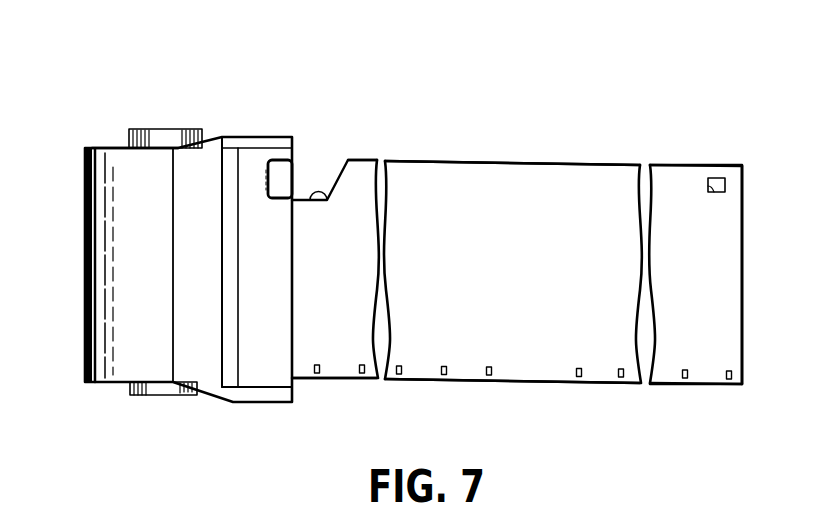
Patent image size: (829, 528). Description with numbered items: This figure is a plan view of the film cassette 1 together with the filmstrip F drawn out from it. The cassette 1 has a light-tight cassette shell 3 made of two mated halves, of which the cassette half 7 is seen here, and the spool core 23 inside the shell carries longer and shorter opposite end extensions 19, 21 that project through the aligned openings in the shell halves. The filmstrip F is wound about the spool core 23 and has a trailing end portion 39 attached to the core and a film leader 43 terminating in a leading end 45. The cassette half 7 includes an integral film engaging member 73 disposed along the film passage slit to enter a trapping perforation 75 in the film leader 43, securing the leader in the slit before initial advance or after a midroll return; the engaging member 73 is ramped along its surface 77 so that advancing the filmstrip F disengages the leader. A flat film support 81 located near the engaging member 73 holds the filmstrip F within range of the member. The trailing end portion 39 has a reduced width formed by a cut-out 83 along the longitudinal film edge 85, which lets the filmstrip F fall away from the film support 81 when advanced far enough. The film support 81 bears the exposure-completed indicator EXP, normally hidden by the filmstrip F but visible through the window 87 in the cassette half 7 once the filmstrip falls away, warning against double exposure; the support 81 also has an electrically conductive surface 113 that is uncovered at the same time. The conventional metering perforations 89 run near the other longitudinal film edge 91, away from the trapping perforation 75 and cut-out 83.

The film cassette 1 is at (215, 123).
The cassette shell 3 is at (82, 191).
The cassette half 7 is at (86, 243).
The longer end extension 19 is at (162, 128).
The shorter end extension 21 is at (142, 396).
The spool core 23 is at (130, 146).
The trailing end portion 39 is at (343, 317).
The film leader 43 is at (700, 293).
The leading end 45 is at (742, 327).
The film engaging member 73 is at (265, 166).
The trapping perforation 75 is at (713, 193).
The ramped surface 77 is at (268, 182).
The film support 81 is at (293, 177).
The cut-out 83 is at (326, 202).
The longitudinal film edge 85 is at (366, 159).
The window 87 is at (272, 199).
The metering perforations 89 is at (321, 375).
The longitudinal film edge 91 is at (366, 381).
The electrically conductive surface 113 is at (292, 165).
The filmstrip F is at (444, 152).